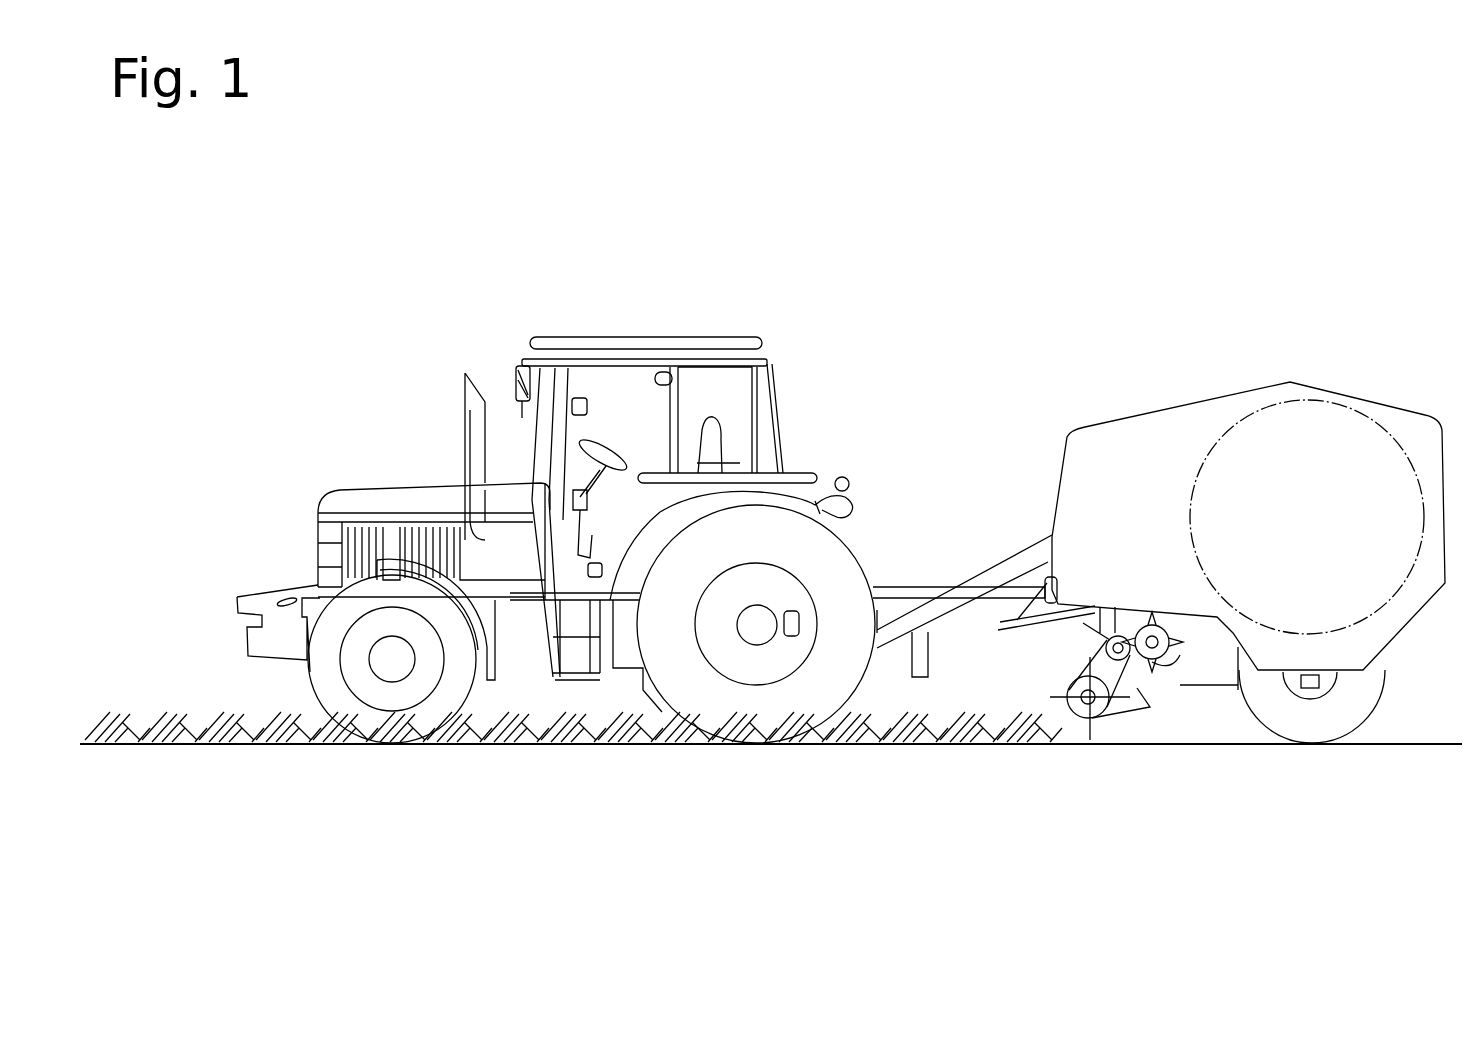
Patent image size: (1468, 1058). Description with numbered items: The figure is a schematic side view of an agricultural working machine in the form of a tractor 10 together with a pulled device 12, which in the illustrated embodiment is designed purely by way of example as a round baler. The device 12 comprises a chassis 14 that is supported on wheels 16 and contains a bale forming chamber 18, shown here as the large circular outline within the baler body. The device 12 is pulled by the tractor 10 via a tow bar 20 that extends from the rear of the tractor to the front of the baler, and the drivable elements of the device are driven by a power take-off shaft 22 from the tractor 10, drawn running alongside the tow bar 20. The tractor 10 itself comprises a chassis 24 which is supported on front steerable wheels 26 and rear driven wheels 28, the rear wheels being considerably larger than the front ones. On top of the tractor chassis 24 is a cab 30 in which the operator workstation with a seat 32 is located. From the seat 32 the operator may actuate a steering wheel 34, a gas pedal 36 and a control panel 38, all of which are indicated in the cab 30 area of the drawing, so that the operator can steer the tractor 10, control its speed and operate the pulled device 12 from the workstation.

The tractor 10 is at (565, 322).
The device 12 is at (1253, 496).
The chassis 14 is at (1393, 610).
The wheels 16 is at (1348, 715).
The bale forming chamber 18 is at (1340, 445).
The tow bar 20 is at (1000, 570).
The power take-off shaft 22 is at (897, 586).
The chassis 24 is at (509, 708).
The front steerable wheels 26 is at (392, 722).
The rear driven wheels 28 is at (760, 720).
The cab 30 is at (755, 355).
The seat 32 is at (713, 433).
The steering wheel 34 is at (603, 446).
The gas pedal 36 is at (571, 578).
The control panel 38 is at (571, 406).